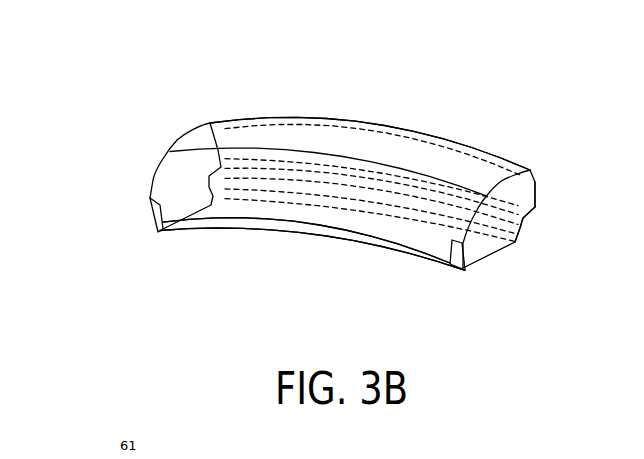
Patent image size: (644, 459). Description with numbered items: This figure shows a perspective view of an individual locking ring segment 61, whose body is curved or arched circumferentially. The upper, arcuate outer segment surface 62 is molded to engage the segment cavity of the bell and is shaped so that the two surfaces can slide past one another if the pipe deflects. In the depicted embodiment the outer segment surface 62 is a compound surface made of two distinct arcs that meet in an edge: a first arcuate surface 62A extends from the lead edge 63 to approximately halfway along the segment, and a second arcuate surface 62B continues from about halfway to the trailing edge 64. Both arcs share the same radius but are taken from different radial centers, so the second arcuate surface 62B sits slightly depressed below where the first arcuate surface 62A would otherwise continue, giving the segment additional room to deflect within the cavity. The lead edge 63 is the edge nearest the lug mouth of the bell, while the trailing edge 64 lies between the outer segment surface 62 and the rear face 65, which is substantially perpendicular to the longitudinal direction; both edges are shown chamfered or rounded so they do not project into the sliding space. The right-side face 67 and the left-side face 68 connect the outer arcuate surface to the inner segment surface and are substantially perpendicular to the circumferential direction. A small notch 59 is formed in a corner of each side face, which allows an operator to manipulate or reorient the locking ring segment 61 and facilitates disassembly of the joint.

The locking ring segment 61 is at (306, 89).
The outer segment surface 62 is at (382, 172).
The first arcuate surface 62A is at (273, 203).
The second arcuate surface 62B is at (243, 138).
The lead edge 63 is at (378, 245).
The trailing edge 64 is at (531, 170).
The rear face 65 is at (536, 192).
The right-side face 67 is at (508, 227).
The left-side face 68 is at (177, 185).
The small notch 59 is at (153, 215).